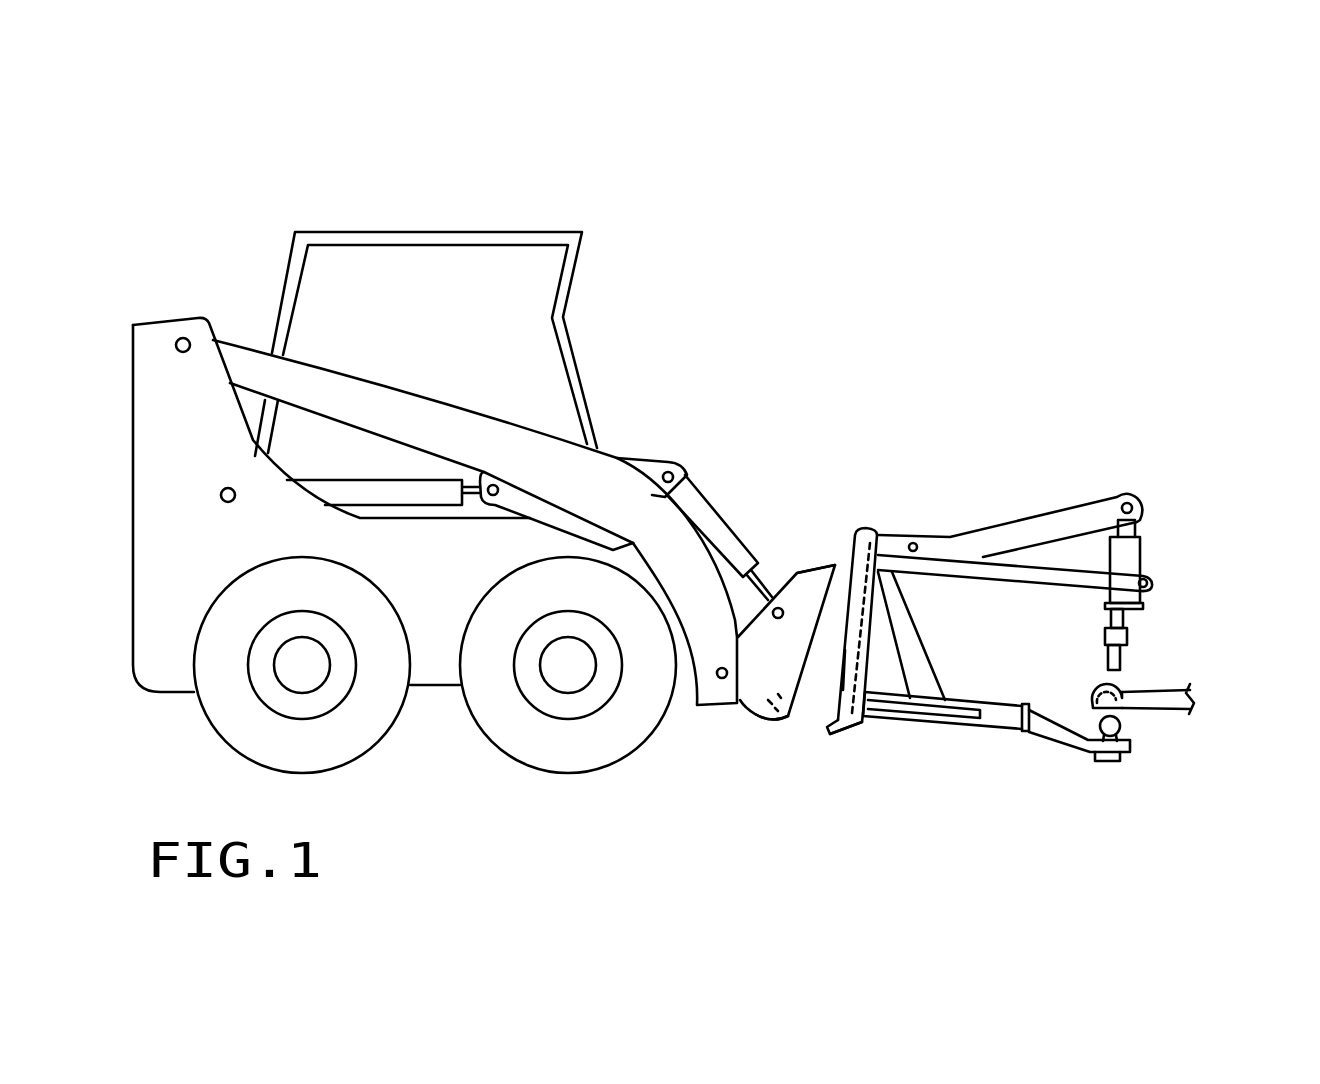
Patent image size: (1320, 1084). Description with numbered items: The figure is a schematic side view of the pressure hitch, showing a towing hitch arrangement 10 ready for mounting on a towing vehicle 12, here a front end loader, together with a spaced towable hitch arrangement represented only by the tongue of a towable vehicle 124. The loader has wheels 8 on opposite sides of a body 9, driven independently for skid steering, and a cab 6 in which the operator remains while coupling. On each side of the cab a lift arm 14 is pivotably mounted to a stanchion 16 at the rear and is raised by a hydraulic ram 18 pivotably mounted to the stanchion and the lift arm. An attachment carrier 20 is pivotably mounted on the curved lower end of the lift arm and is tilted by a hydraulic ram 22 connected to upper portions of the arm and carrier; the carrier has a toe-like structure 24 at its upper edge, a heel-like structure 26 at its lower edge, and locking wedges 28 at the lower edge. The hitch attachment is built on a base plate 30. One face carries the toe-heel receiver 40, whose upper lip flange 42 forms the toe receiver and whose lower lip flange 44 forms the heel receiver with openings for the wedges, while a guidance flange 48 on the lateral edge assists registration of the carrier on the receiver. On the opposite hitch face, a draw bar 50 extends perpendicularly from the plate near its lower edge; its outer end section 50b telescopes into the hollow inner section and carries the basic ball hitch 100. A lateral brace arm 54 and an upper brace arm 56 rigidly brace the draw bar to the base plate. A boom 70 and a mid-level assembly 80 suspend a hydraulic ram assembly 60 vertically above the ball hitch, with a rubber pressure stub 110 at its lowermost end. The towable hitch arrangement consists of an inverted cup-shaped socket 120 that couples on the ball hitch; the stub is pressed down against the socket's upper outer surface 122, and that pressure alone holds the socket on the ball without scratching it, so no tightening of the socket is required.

The cab 6 is at (443, 232).
The wheels 8 is at (270, 725).
The body 9 is at (446, 617).
The towing hitch arrangement 10 is at (1015, 480).
The towing vehicle 12 is at (625, 350).
The lift arm 14 is at (380, 413).
The stanchion 16 is at (200, 440).
The hydraulic ram 18 is at (380, 493).
The attachment carrier 20 is at (753, 668).
The hydraulic ram 22 is at (717, 532).
The toe-like structure 24 is at (840, 567).
The heel-like structure 26 is at (787, 714).
The locking wedges 28 is at (768, 718).
The base plate 30 is at (866, 633).
The toe-heel receiver 40 is at (832, 757).
The upper lip flange 42 is at (873, 530).
The lower lip flange 44 is at (838, 722).
The guidance flange 48 is at (852, 673).
The draw bar 50 is at (1002, 715).
The outer end section 50b is at (1090, 752).
The lateral brace arm 54 is at (930, 712).
The upper brace arm 56 is at (913, 658).
The hydraulic ram assembly 60 is at (1125, 558).
The boom 70 is at (1040, 527).
The mid-level assembly 80 is at (1035, 573).
The basic ball hitch 100 is at (1123, 722).
The rubber pressure stub 110 is at (1130, 673).
The inverted cup-shaped socket 120 is at (1085, 725).
The upper outer surface 122 is at (1120, 682).
The towable vehicle 124 is at (1163, 692).